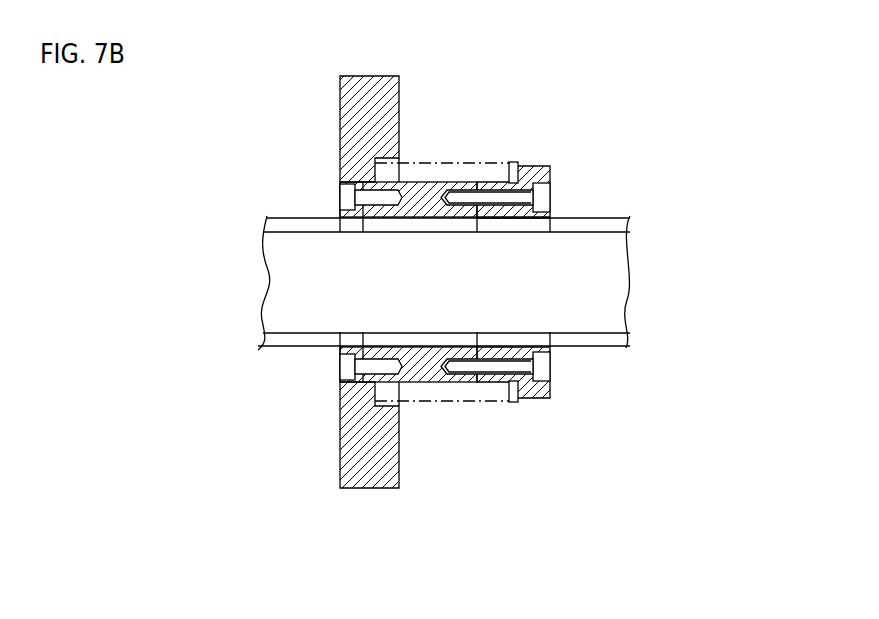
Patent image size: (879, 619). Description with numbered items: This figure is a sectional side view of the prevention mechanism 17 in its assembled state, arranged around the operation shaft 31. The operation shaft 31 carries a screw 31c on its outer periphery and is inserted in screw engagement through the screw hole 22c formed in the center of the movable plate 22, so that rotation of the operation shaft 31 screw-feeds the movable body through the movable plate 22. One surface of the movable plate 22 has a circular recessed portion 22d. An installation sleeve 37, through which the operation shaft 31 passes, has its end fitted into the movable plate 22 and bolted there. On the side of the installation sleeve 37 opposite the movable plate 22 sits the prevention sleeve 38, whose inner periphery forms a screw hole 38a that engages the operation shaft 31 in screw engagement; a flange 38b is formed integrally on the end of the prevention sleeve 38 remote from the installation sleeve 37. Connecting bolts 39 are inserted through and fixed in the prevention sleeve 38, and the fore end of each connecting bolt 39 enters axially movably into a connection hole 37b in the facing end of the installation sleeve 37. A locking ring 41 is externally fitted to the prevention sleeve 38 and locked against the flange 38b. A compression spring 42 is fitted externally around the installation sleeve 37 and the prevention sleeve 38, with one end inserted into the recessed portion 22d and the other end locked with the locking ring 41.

The prevention mechanism 17 is at (577, 95).
The movable plate 22 is at (375, 493).
The screw hole 22c is at (352, 234).
The recessed portion 22d is at (384, 170).
The operation shaft 31 is at (303, 335).
The screw 31c is at (275, 347).
The installation sleeve 37 is at (422, 295).
The connection hole 37b is at (422, 295).
The prevention sleeve 38 is at (540, 166).
The screw hole 38a is at (520, 232).
The flange 38b is at (542, 396).
The connecting bolt 39 is at (550, 195).
The locking ring 41 is at (513, 403).
The compression spring 42 is at (480, 162).